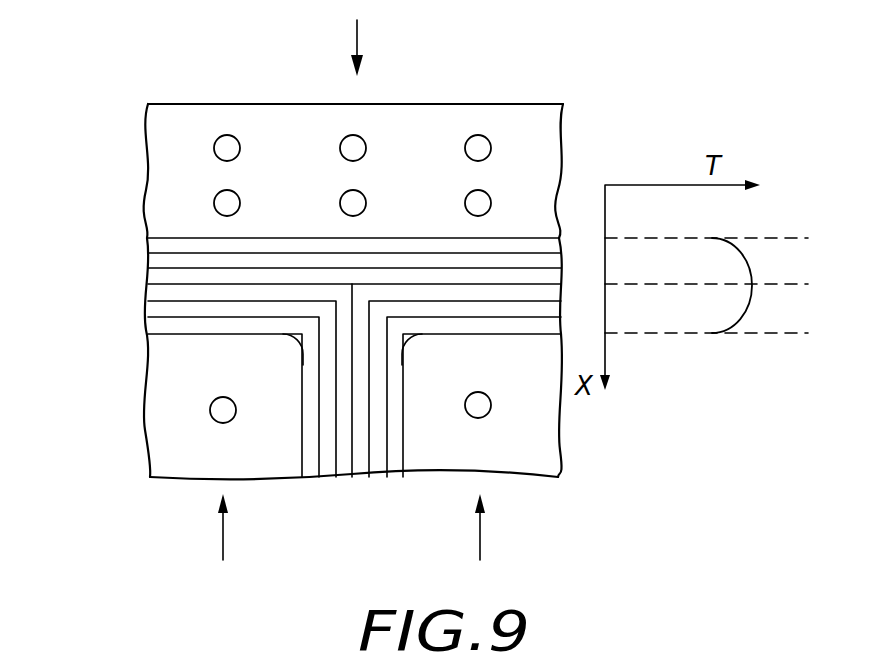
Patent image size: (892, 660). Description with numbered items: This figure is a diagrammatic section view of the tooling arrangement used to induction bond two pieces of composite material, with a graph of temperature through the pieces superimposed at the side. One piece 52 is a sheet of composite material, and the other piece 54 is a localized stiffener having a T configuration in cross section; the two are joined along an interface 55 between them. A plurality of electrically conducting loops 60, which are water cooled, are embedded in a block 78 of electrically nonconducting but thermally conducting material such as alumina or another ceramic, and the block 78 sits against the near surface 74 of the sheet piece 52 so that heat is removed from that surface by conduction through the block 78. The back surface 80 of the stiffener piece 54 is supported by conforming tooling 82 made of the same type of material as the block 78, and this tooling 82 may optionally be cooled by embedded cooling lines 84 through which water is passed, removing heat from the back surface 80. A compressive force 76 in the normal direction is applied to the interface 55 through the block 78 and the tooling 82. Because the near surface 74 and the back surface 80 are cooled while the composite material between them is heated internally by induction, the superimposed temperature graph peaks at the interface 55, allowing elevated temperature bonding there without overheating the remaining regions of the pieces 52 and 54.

The piece of composite material 52 is at (158, 262).
The stiffener piece 54 is at (158, 308).
The interface 55 is at (208, 285).
The electrically conducting loops 60 is at (340, 148).
The near surface 74 is at (392, 242).
The compressive force 76 is at (358, 42).
The block 78 is at (545, 148).
The back surface 80 is at (470, 320).
The conforming tooling 82 is at (537, 451).
The cooling lines 84 is at (503, 393).